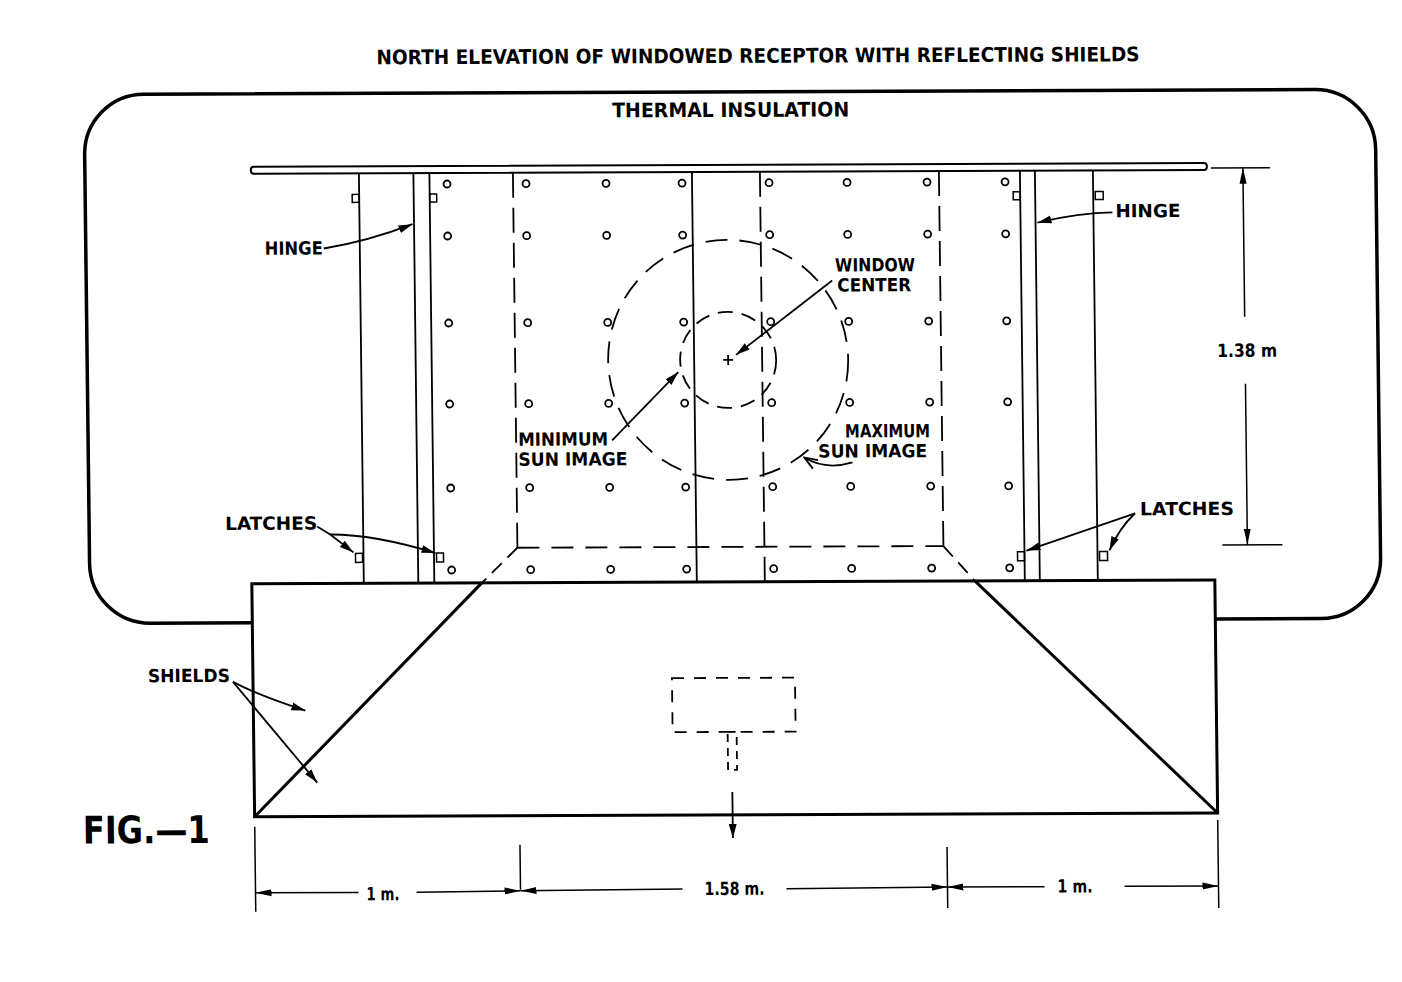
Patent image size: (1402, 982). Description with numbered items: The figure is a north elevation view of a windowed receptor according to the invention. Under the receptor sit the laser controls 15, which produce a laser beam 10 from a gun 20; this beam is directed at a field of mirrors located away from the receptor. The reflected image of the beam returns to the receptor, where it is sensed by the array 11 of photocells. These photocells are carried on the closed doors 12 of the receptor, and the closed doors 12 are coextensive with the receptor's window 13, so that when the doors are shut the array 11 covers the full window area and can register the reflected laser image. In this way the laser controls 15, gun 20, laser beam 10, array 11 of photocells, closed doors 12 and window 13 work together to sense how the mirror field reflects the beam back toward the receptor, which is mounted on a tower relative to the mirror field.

The laser beam 10 is at (730, 823).
The array of photocells 11 is at (341, 352).
The closed doors 12 is at (581, 287).
The window 13 is at (936, 198).
The laser controls 15 is at (792, 704).
The gun 20 is at (732, 752).